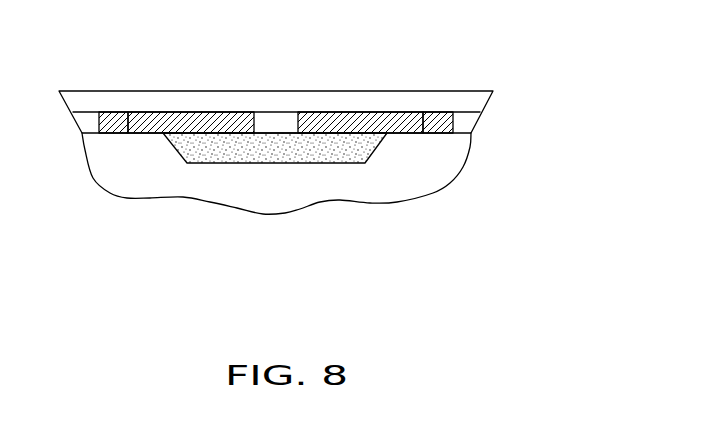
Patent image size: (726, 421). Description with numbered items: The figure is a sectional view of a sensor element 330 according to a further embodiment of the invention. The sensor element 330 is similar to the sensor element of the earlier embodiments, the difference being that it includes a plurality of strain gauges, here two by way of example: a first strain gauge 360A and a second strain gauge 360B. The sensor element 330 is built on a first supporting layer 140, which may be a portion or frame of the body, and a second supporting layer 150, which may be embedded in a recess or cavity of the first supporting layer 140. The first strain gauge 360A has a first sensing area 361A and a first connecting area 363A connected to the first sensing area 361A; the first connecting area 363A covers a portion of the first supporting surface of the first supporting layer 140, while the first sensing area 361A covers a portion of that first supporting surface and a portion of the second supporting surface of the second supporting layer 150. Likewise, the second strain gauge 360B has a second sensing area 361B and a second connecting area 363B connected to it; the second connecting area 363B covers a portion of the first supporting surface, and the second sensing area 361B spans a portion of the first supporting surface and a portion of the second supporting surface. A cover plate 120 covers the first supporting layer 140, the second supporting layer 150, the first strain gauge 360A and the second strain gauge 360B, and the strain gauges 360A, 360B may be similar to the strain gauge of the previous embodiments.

The cover plate 120 is at (480, 102).
The first supporting layer 140 is at (450, 165).
The second supporting layer 150 is at (333, 155).
The sensor element 330 is at (545, 217).
The first strain gauge 360A is at (172, 66).
The second strain gauge 360B is at (376, 66).
The first sensing area 361A is at (180, 117).
The second sensing area 361B is at (372, 117).
The first connecting area 363A is at (115, 117).
The second connecting area 363B is at (442, 117).